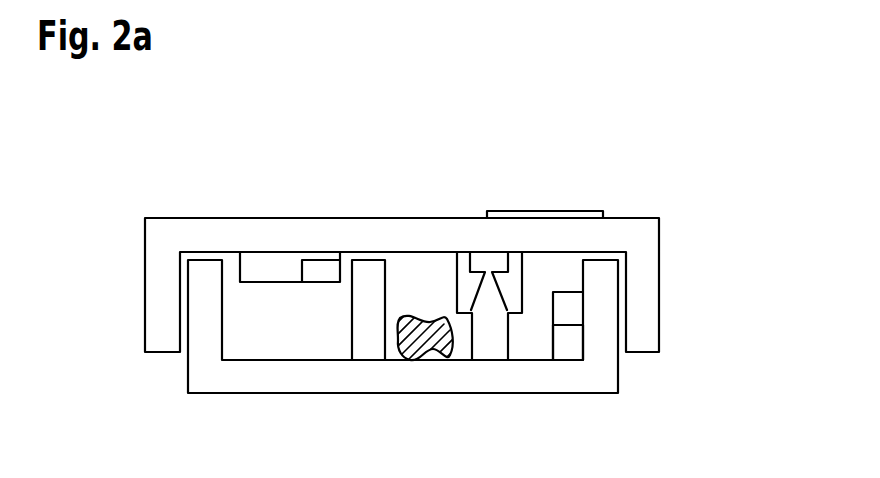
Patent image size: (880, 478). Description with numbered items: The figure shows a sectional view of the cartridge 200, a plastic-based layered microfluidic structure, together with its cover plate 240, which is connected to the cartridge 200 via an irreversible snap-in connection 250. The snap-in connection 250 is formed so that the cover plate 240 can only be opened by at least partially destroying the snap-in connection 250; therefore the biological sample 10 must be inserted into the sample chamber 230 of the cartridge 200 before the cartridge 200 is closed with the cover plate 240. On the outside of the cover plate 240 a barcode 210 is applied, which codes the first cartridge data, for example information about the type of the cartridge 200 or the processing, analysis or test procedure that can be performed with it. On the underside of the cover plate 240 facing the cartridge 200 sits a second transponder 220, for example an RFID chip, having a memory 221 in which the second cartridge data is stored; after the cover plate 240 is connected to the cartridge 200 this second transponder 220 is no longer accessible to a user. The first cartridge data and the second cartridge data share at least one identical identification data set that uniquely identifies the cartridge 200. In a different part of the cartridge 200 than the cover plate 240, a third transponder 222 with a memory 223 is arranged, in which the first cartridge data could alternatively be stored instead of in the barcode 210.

The cartridge 200 is at (380, 210).
The barcode 210 is at (552, 211).
The second transponder 220 is at (258, 262).
The memory 221 is at (318, 263).
The third transponder 222 is at (573, 312).
The memory 223 is at (563, 348).
The sample chamber 230 is at (392, 350).
The cover plate 240 is at (650, 298).
The snap-in connection 250 is at (456, 289).
The biological sample 10 is at (445, 362).